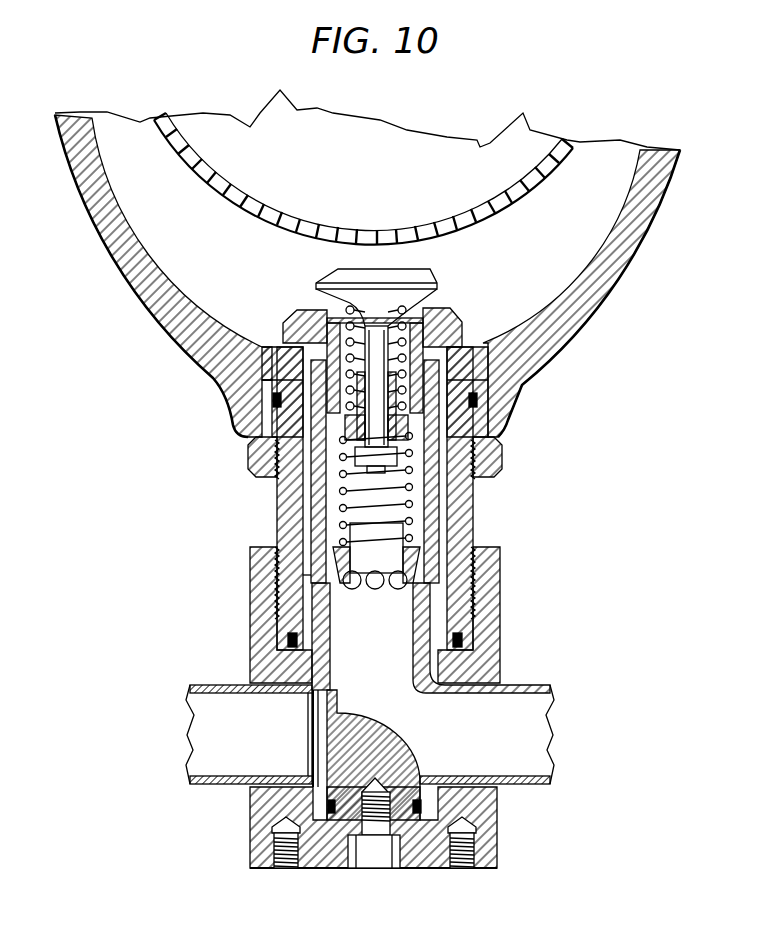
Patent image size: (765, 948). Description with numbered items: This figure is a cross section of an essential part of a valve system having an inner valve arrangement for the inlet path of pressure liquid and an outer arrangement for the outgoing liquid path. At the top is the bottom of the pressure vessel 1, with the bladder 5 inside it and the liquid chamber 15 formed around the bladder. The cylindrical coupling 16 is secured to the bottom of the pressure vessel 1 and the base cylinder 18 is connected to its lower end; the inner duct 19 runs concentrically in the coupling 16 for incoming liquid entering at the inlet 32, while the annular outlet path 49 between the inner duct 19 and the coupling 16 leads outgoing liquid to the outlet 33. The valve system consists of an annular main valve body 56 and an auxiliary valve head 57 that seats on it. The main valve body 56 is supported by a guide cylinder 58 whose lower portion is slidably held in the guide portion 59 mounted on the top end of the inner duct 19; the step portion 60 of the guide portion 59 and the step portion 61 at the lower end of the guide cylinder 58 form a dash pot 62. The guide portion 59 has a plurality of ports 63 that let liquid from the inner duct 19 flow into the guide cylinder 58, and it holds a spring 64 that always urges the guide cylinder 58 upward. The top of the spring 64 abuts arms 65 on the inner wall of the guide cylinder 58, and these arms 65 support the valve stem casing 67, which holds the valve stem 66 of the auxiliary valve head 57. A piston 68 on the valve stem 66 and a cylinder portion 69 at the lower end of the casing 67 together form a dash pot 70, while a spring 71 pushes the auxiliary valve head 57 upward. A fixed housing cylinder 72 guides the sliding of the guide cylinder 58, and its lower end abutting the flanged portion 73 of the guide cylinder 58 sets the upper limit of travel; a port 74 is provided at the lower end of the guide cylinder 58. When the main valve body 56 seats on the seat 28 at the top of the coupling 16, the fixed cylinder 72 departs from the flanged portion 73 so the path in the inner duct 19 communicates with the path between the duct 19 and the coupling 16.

The pressure vessel 1 is at (627, 252).
The bladder 5 is at (523, 187).
The liquid chamber 15 is at (146, 196).
The cylindrical coupling 16 is at (460, 525).
The base cylinder 18 is at (257, 812).
The inner duct 19 is at (460, 627).
The seat 28 is at (300, 343).
The inlet 32 is at (537, 723).
The outlet 33 is at (203, 723).
The annular outlet path 49 is at (280, 530).
The annular main valve body 56 is at (452, 313).
The auxiliary valve head 57 is at (333, 273).
The guide cylinder 58 is at (433, 552).
The guide portion 59 is at (433, 568).
The step portion 60 is at (257, 575).
The step portion 61 is at (300, 618).
The dash pot 62 is at (307, 580).
The ports 63 is at (397, 590).
The spring 64 is at (307, 528).
The arms 65 is at (323, 432).
The valve stem 66 is at (450, 343).
The valve stem casing 67 is at (473, 390).
The piston 68 is at (495, 467).
The cylinder portion 69 is at (400, 418).
The dash pot 70 is at (490, 427).
The spring 71 is at (366, 345).
The fixed housing cylinder 72 is at (270, 413).
The flanged portion 73 is at (460, 497).
The port 74 is at (323, 475).